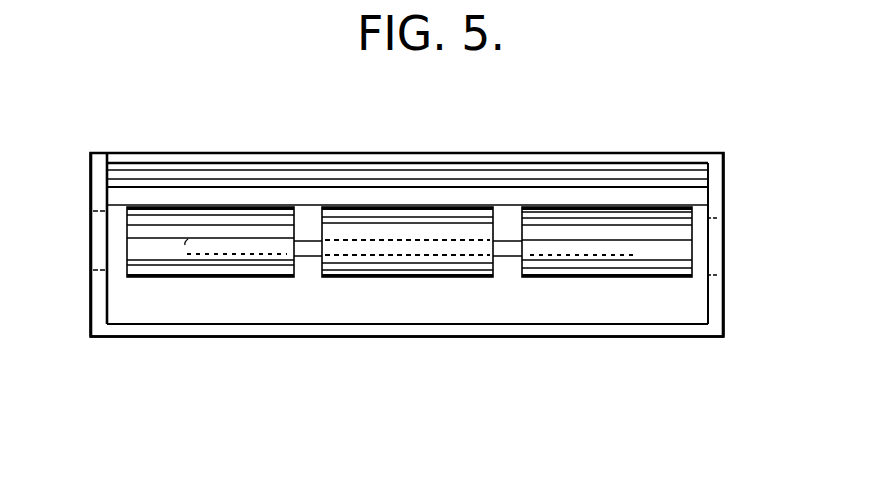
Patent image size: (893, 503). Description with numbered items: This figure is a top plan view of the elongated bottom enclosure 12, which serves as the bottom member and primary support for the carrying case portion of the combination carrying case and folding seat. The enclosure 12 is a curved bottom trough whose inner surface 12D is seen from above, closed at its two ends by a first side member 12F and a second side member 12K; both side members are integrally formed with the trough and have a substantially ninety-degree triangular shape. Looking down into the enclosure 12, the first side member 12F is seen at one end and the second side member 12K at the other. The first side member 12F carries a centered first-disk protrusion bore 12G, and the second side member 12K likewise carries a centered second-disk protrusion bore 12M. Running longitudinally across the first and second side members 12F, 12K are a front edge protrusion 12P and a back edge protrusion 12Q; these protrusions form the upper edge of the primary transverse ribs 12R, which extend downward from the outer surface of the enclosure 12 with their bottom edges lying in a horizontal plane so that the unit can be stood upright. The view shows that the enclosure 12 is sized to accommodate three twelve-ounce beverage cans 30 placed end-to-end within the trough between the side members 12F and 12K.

The elongated bottom enclosure 12 is at (735, 146).
The back edge protrusion 12Q is at (158, 153).
The inner surface 12D is at (680, 183).
The first side member 12F is at (90, 178).
The first-disk protrusion bore 12G is at (96, 241).
The front edge protrusion 12P is at (146, 338).
The second side member 12K is at (725, 195).
The second-disk protrusion bore 12M is at (717, 262).
The primary transverse ribs 12R is at (505, 240).
The beverage cans 30 is at (263, 207).